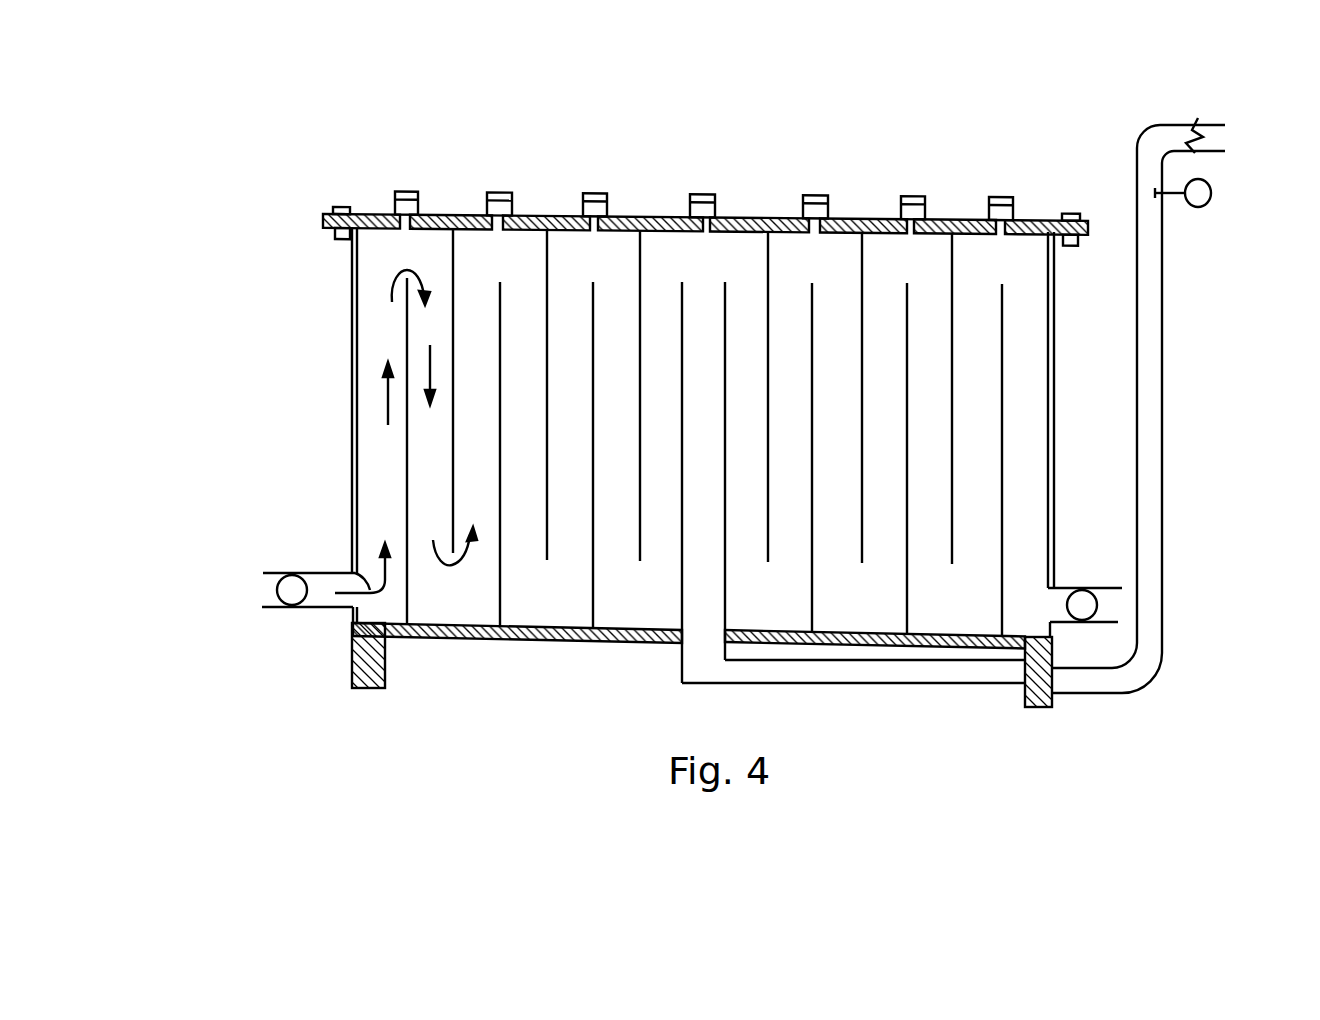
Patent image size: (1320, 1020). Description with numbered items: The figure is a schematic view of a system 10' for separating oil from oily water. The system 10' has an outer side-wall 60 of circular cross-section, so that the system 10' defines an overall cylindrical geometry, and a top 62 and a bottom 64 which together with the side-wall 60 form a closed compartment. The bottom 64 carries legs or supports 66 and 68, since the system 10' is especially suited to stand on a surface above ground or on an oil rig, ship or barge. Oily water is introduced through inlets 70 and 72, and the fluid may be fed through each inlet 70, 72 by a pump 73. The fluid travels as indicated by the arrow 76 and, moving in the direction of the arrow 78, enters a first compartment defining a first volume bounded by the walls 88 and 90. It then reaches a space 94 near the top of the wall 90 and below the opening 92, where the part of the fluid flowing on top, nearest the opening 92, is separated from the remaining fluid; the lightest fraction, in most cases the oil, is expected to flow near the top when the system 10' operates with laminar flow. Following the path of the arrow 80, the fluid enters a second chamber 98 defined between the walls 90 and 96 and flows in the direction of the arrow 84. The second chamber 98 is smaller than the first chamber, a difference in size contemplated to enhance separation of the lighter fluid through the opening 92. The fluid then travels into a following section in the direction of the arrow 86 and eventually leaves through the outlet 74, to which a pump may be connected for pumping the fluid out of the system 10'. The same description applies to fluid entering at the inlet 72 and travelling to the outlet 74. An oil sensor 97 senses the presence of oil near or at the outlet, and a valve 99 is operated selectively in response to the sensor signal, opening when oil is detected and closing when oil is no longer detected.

The system 10' is at (260, 160).
The opening 92 is at (397, 205).
The second chamber 98 is at (435, 272).
The space 94 is at (452, 215).
The top 62 is at (468, 212).
The wall 96 is at (453, 253).
The valve 99 is at (1198, 120).
The outlet 74 is at (1225, 143).
The oil sensor 97 is at (1212, 194).
The arrow 80 is at (388, 300).
The arrow 84 is at (430, 345).
The outer side-wall 60 is at (352, 355).
The arrow 78 is at (384, 386).
The wall 88 is at (352, 440).
The arrow 86 is at (433, 553).
The arrow 76 is at (353, 572).
The inlet 70 is at (258, 584).
The pump 73 is at (278, 590).
The wall 90 is at (407, 602).
The leg 66 is at (385, 673).
The bottom 64 is at (593, 643).
The inlet 72 is at (1110, 588).
The leg 68 is at (1040, 708).